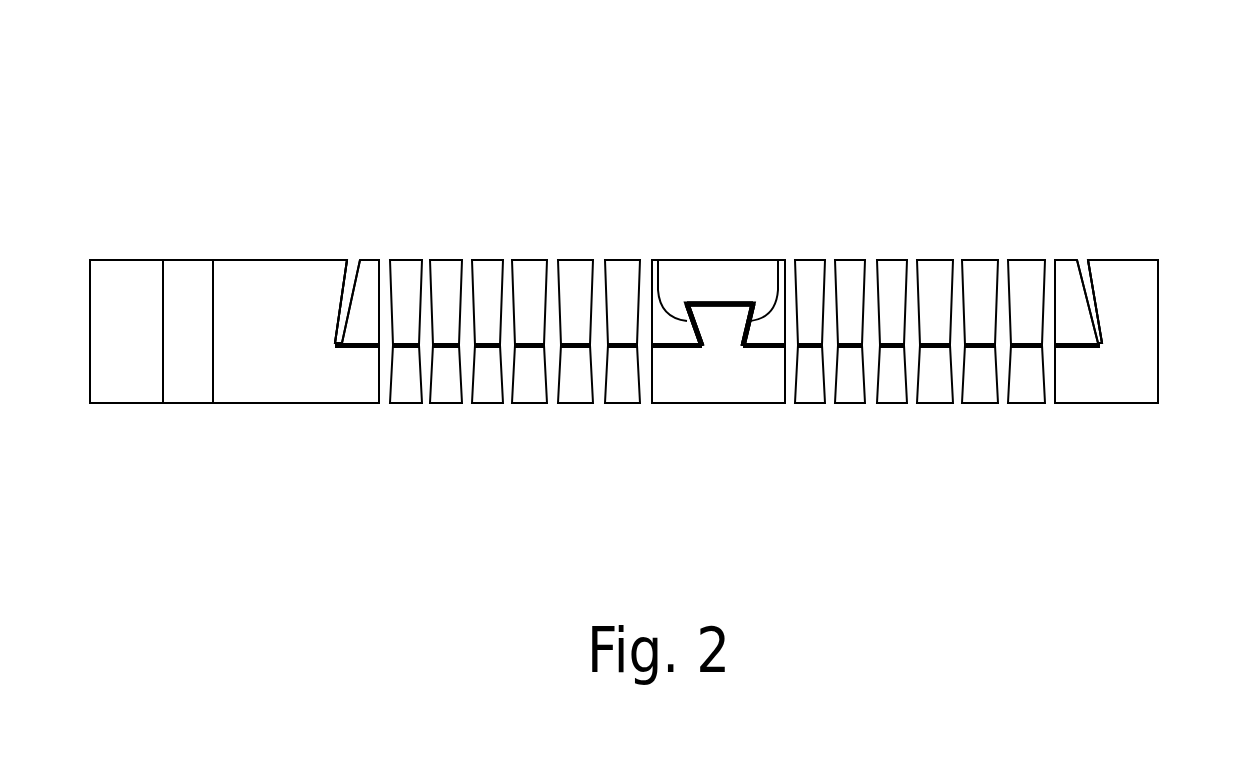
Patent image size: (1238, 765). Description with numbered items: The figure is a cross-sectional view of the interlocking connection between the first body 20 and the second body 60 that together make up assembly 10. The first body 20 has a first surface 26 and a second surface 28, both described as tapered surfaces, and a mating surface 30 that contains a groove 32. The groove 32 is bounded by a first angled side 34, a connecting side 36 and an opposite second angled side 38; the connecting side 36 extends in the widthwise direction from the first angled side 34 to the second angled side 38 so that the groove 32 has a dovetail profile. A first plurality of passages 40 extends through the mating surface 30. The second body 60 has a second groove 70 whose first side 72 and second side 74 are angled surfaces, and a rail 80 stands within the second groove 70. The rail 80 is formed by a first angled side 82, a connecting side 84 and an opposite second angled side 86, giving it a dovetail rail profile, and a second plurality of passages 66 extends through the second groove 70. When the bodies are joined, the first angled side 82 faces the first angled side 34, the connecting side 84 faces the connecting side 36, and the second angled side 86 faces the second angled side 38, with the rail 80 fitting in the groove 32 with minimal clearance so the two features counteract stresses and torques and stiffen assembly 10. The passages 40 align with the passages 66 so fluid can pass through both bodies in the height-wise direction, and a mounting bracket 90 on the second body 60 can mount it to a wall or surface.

The assembly 10 is at (987, 157).
The first body 20 is at (712, 272).
The first surface 26 is at (357, 265).
The second surface 28 is at (1080, 262).
The mating surface 30 is at (765, 341).
The groove 32 is at (728, 300).
The first angled side 34 is at (659, 260).
The connecting side 36 is at (703, 300).
The second angled side 38 is at (777, 262).
The first plurality of passages 40 is at (470, 268).
The second body 60 is at (1109, 388).
The second plurality of passages 66 is at (464, 397).
The second groove 70 is at (892, 349).
The first side 72 is at (341, 305).
The second side 74 is at (1092, 292).
The rail 80 is at (722, 331).
The first angled side 82 is at (699, 328).
The connecting side 84 is at (713, 300).
The second angled side 86 is at (755, 338).
The mounting bracket 90 is at (163, 270).